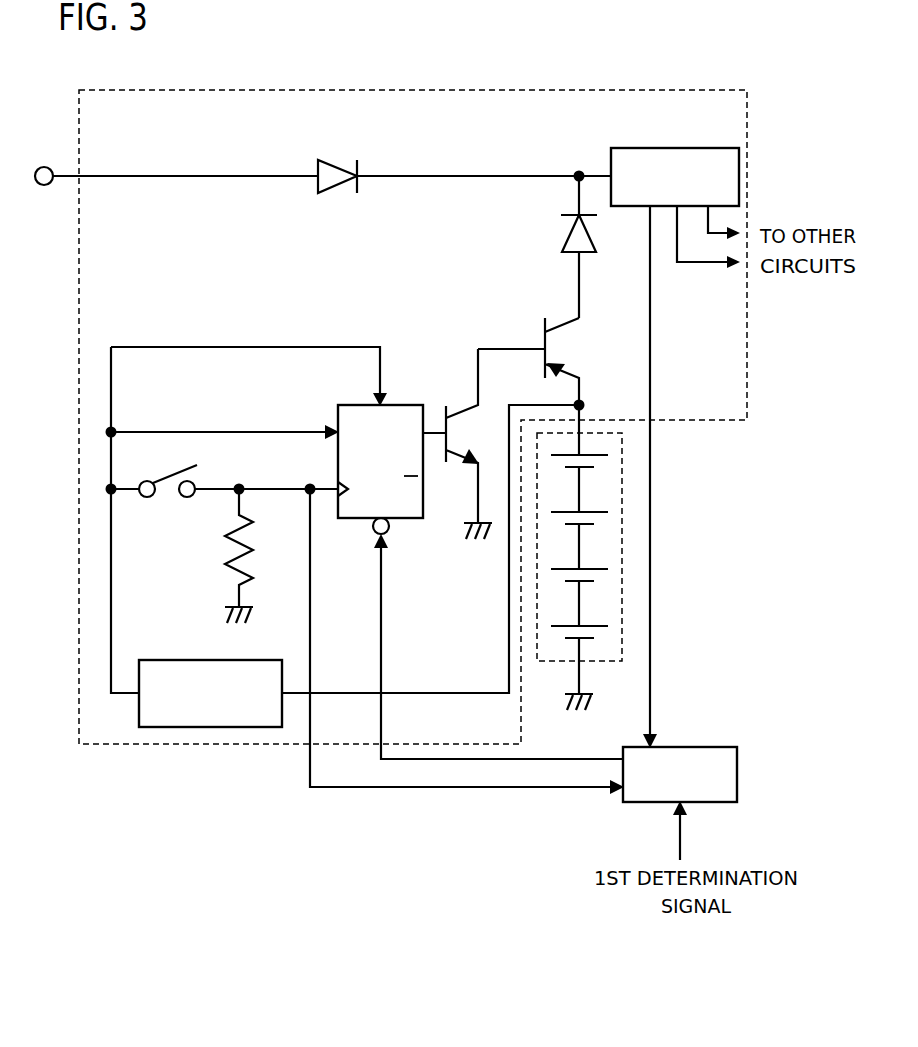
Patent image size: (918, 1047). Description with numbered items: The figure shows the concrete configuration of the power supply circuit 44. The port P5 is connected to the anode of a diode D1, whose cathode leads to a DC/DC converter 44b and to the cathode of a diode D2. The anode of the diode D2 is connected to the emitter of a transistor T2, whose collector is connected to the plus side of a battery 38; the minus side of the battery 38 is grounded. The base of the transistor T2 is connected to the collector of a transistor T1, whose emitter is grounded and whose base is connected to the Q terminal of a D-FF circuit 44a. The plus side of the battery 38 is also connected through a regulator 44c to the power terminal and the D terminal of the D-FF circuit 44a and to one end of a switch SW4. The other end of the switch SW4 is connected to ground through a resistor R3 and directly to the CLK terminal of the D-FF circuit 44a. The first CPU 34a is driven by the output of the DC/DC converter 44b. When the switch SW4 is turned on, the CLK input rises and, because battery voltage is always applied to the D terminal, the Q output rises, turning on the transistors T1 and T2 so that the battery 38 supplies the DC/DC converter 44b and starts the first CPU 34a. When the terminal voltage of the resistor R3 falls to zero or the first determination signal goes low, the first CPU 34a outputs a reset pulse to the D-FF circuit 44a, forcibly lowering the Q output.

The power supply circuit 44 is at (395, 90).
The D-FF circuit 44a is at (336, 407).
The DC/DC converter 44b is at (670, 148).
The regulator 44c is at (235, 728).
The battery 38 is at (622, 515).
The first CPU 34a is at (695, 747).
The port P5 is at (38, 168).
The diode D1 is at (337, 162).
The diode D2 is at (561, 247).
The transistor T1 is at (457, 444).
The transistor T2 is at (528, 361).
The switch SW4 is at (224, 469).
The resistor R3 is at (223, 556).